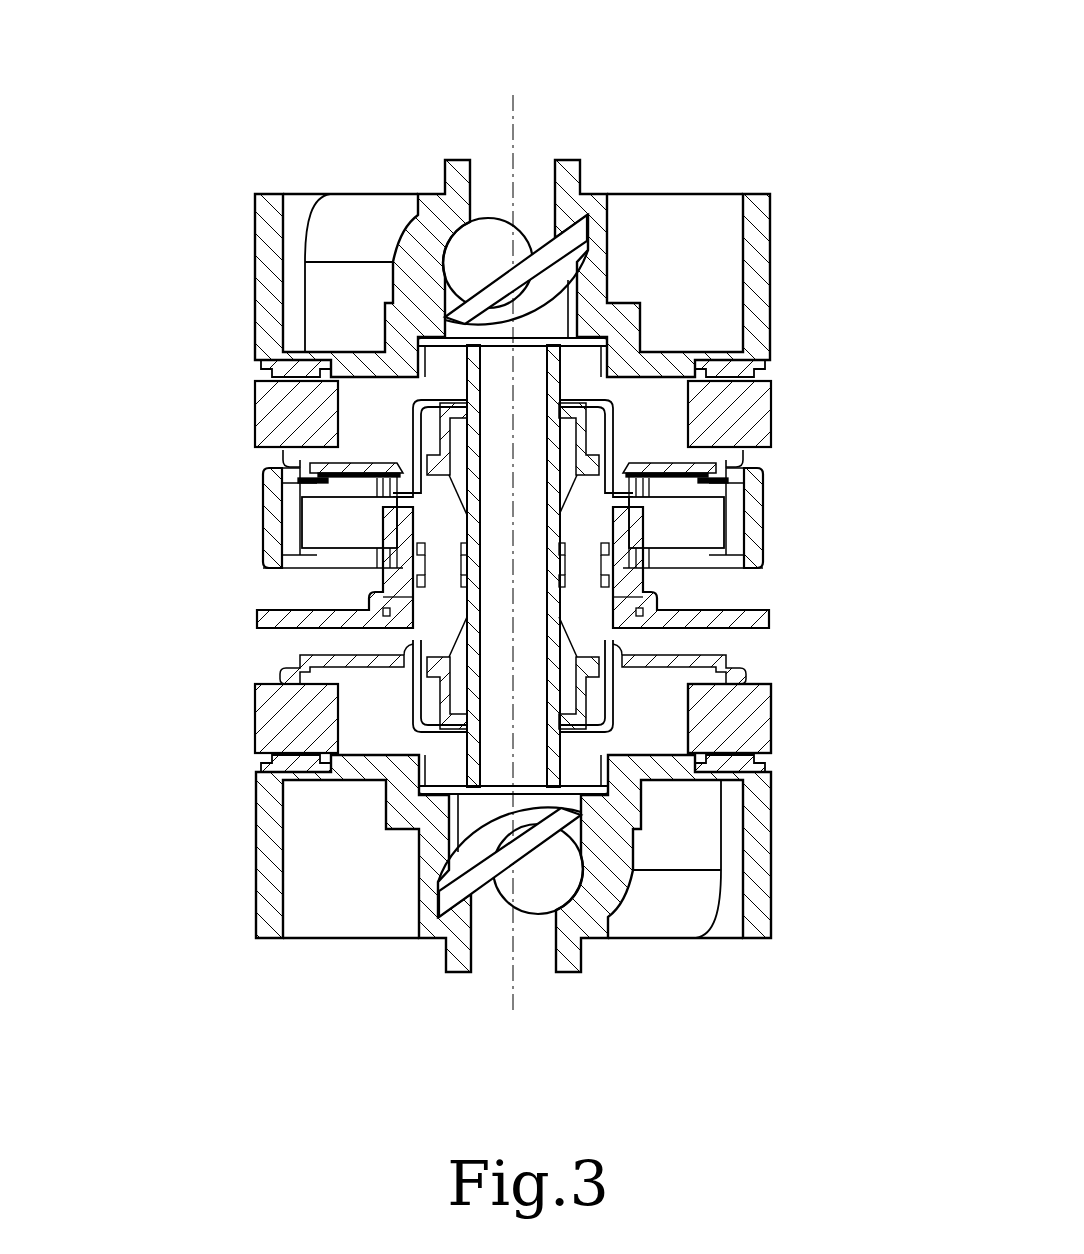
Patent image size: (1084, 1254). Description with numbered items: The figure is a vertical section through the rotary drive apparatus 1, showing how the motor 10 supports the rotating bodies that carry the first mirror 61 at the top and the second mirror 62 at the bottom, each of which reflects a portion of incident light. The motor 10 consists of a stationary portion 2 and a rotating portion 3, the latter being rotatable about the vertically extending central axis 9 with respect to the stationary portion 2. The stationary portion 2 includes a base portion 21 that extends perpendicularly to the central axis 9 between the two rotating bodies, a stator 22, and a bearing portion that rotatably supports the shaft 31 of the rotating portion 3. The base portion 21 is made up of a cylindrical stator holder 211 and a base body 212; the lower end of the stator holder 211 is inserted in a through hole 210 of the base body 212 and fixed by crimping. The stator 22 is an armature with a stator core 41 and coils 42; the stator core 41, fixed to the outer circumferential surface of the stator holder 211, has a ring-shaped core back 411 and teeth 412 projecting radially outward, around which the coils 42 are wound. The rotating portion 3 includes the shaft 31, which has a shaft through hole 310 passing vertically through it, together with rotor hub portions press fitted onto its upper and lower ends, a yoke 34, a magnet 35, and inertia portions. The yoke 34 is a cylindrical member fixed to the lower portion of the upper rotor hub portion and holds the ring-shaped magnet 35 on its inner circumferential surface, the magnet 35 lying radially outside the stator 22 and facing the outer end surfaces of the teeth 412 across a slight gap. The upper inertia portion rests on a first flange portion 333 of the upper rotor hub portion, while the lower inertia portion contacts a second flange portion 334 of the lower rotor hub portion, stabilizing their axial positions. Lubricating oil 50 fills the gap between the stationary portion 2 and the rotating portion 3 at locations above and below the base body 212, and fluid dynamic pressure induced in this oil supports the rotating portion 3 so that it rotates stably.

The rotary drive apparatus 1 is at (507, 551).
The stationary portion 2 is at (507, 573).
The rotating portion 3 is at (258, 457).
The central axis 9 is at (511, 96).
The motor 10 is at (261, 600).
The base portion 21 is at (277, 731).
The stator 22 is at (256, 622).
The shaft 31 is at (573, 432).
The yoke 34 is at (745, 472).
The magnet 35 is at (735, 502).
The stator core 41 is at (276, 602).
The coils 42 is at (285, 562).
The lubricating oil 50 is at (448, 440).
The first mirror 61 is at (556, 254).
The second mirror 62 is at (500, 737).
The through hole 210 is at (637, 630).
The stator holder 211 is at (335, 562).
The base body 212 is at (298, 668).
The shaft through hole 310 is at (454, 707).
The first flange portion 333 is at (732, 460).
The second flange portion 334 is at (730, 672).
The core back 411 is at (362, 528).
The teeth 412 is at (330, 485).